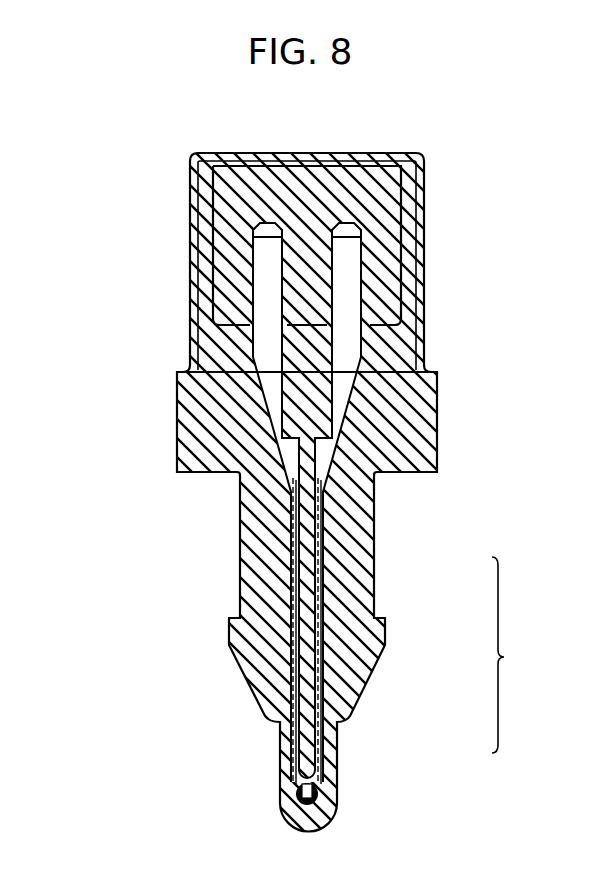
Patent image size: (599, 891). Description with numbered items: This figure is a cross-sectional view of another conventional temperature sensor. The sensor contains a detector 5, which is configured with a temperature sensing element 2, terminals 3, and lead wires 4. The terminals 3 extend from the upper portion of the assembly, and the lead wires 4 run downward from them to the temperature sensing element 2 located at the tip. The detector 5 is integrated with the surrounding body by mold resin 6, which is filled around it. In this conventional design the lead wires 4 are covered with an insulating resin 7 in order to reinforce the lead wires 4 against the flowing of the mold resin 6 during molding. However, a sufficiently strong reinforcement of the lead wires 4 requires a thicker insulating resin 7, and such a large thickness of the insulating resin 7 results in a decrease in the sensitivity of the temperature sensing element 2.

The temperature sensing element 2 is at (322, 781).
The terminals 3 is at (348, 345).
The lead wires 4 is at (328, 630).
The detector 5 is at (508, 655).
The mold resin 6 is at (252, 573).
The insulating resin 7 is at (295, 563).